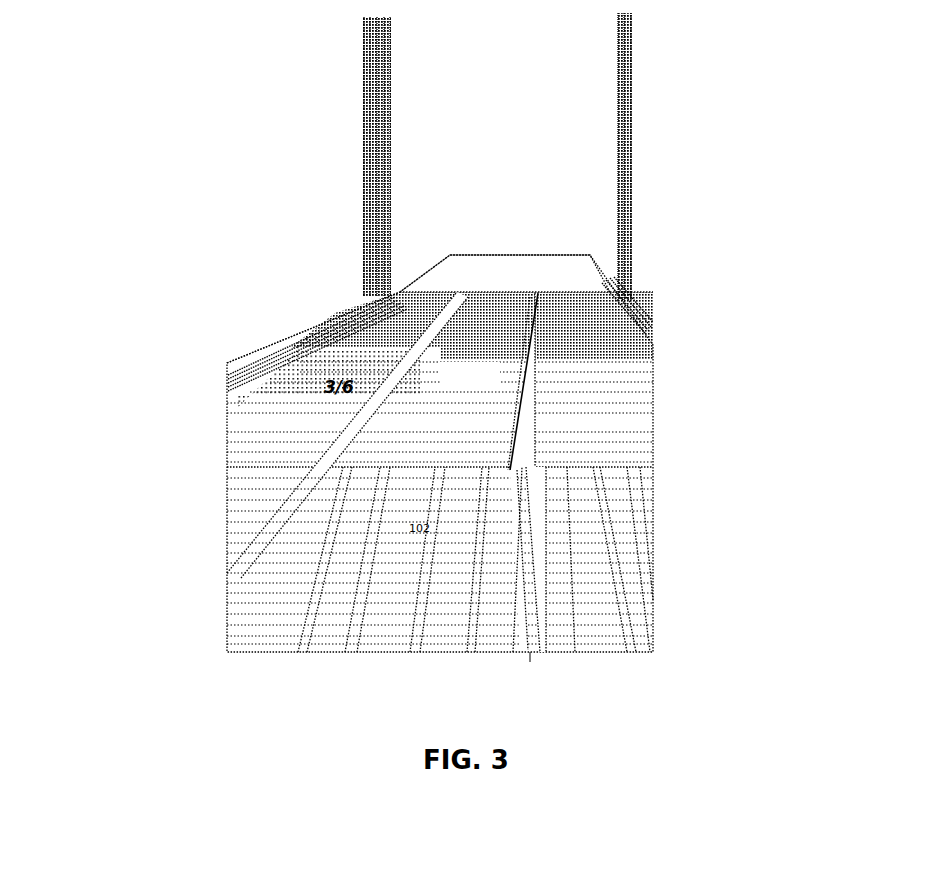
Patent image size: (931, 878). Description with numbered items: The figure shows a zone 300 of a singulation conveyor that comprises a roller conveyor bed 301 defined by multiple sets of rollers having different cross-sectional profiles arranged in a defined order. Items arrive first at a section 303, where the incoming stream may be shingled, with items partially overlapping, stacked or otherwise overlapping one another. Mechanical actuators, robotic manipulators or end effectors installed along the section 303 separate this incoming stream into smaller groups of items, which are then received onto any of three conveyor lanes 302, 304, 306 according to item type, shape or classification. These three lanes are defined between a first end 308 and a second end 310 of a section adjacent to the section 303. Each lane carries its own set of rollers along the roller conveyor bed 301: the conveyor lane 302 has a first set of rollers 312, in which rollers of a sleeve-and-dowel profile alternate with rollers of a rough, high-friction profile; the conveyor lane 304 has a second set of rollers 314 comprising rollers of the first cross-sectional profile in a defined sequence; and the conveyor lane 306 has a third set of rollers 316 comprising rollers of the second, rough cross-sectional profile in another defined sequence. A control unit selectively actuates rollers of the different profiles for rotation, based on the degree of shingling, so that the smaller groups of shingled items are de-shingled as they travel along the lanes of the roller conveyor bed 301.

The zone 300 is at (115, 92).
The roller conveyor bed 301 is at (470, 375).
The conveyor lane 302 is at (395, 320).
The section 303 is at (580, 270).
The conveyor lane 304 is at (455, 310).
The conveyor lane 306 is at (552, 421).
The first end 308 is at (508, 293).
The second end 310 is at (472, 470).
The first set of rollers 312 is at (600, 296).
The second set of rollers 314 is at (613, 378).
The third set of rollers 316 is at (627, 393).